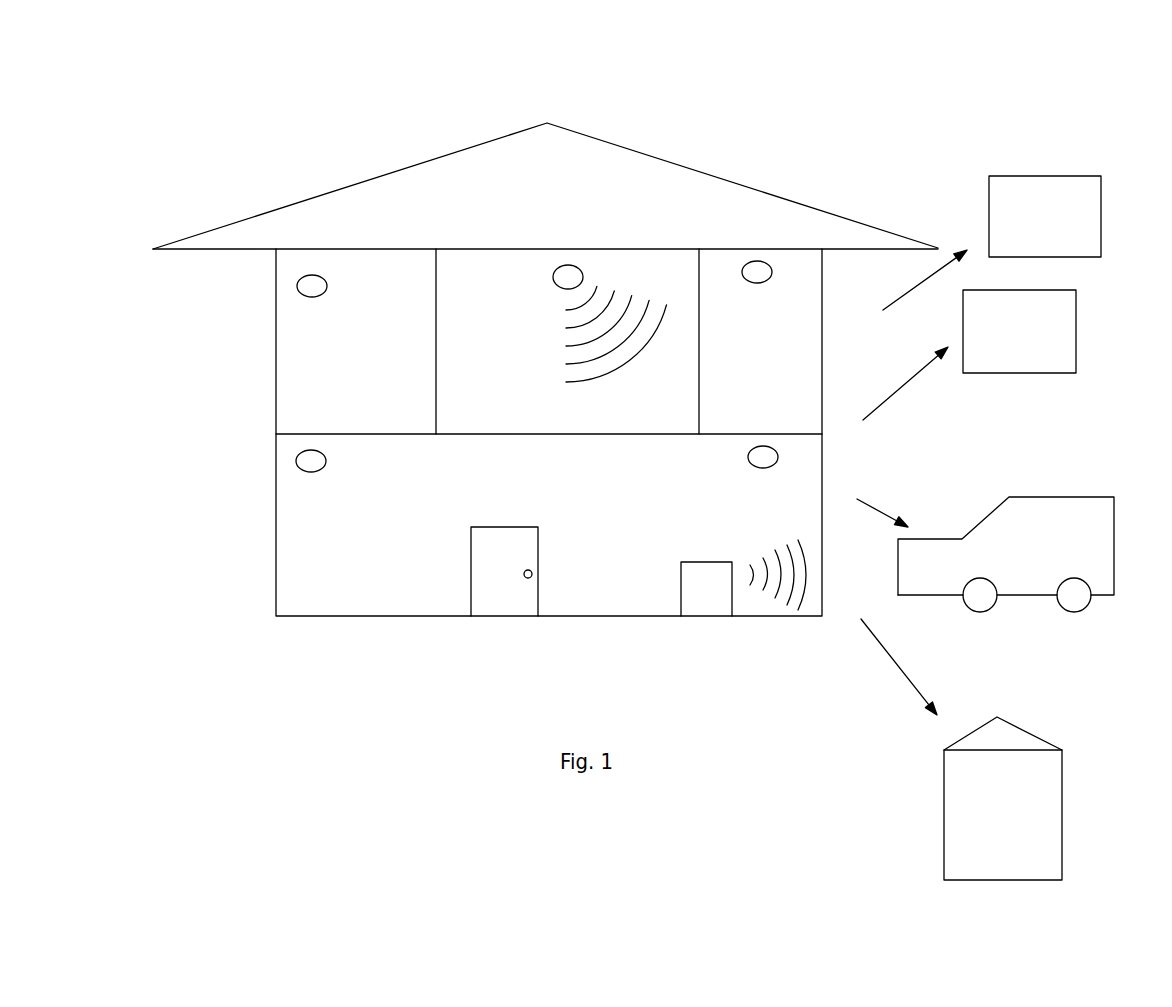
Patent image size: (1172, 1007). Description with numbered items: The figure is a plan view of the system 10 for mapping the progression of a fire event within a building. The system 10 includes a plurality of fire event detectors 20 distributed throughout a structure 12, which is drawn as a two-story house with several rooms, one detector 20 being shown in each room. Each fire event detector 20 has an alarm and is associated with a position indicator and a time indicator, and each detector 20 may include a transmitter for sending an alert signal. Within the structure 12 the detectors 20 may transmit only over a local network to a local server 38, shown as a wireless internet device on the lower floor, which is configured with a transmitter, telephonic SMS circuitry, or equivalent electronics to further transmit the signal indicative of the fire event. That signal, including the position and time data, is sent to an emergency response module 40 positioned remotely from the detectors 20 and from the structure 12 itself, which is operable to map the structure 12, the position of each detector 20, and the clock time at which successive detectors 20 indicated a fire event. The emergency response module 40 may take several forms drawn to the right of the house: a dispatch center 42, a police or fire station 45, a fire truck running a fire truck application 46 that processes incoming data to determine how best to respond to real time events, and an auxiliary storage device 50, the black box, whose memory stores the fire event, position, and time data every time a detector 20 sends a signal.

The system 10 is at (244, 108).
The structure 12 is at (723, 178).
The fire event detectors 20 is at (306, 292).
The local server 38 is at (712, 606).
The emergency response module 40 is at (1064, 84).
The dispatch center 42 is at (1092, 240).
The police or fire station 45 is at (1050, 807).
The fire truck application 46 is at (1102, 507).
The auxiliary storage device 50 is at (1066, 358).